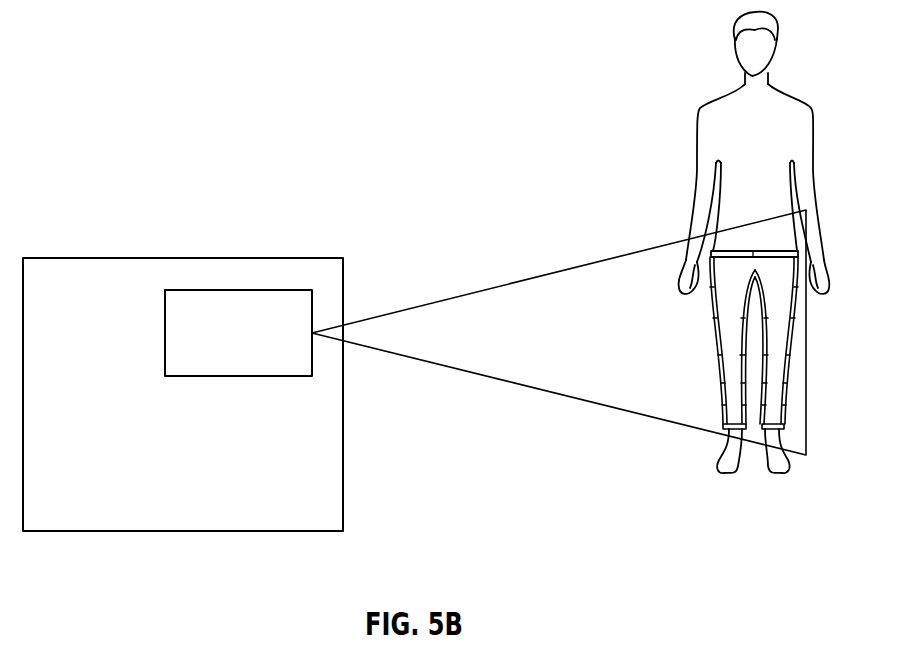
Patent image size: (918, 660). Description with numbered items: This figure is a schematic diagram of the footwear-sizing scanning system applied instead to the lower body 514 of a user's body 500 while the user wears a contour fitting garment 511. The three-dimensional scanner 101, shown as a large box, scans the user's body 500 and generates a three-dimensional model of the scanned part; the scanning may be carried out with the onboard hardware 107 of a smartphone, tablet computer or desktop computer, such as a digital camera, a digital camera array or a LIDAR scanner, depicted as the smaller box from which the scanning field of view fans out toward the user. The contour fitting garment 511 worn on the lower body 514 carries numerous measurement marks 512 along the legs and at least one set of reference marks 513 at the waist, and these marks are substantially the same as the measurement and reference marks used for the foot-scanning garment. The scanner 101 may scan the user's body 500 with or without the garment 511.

The 3D scanner 101 is at (158, 532).
The onboard hardware 107 is at (238, 288).
The user's body 500 is at (716, 474).
The contour fitting garment 511 is at (740, 302).
The measurement marks 512 is at (715, 318).
The reference marks 513 is at (798, 252).
The lower body 514 is at (778, 294).